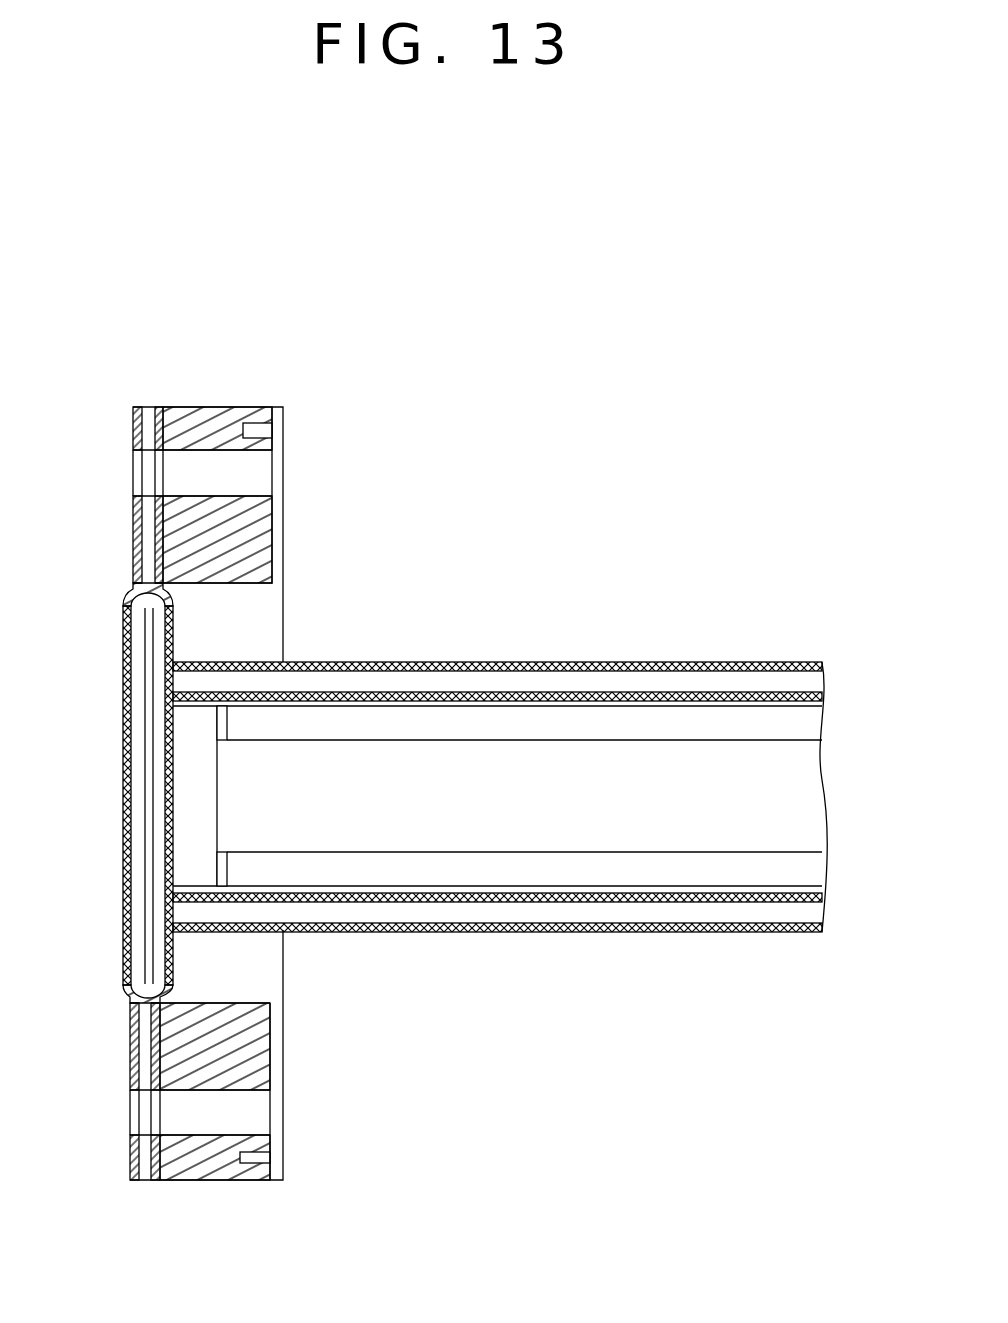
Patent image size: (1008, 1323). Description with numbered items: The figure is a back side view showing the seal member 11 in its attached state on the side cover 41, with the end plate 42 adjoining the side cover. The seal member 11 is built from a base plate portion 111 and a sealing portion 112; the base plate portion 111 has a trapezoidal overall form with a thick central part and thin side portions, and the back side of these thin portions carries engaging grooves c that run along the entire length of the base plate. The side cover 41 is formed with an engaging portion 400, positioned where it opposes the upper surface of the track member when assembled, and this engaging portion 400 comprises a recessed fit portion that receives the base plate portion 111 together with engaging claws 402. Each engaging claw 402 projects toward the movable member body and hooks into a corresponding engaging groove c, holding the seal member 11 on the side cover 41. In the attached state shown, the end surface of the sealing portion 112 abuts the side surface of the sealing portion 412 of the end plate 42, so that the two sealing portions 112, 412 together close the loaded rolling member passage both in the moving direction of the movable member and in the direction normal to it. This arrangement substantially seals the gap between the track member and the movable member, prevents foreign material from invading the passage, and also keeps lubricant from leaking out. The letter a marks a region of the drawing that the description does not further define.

The seal member 11 is at (559, 834).
The base plate portion 111 is at (808, 808).
The sealing portion 112 is at (818, 683).
The side cover 41 is at (273, 532).
The end plate 42 is at (132, 530).
The sealing portion 412 is at (140, 777).
The engaging portion 400 is at (234, 797).
The engaging claw 402 is at (228, 725).
The core region a is at (640, 833).
The engaging groove c is at (433, 865).